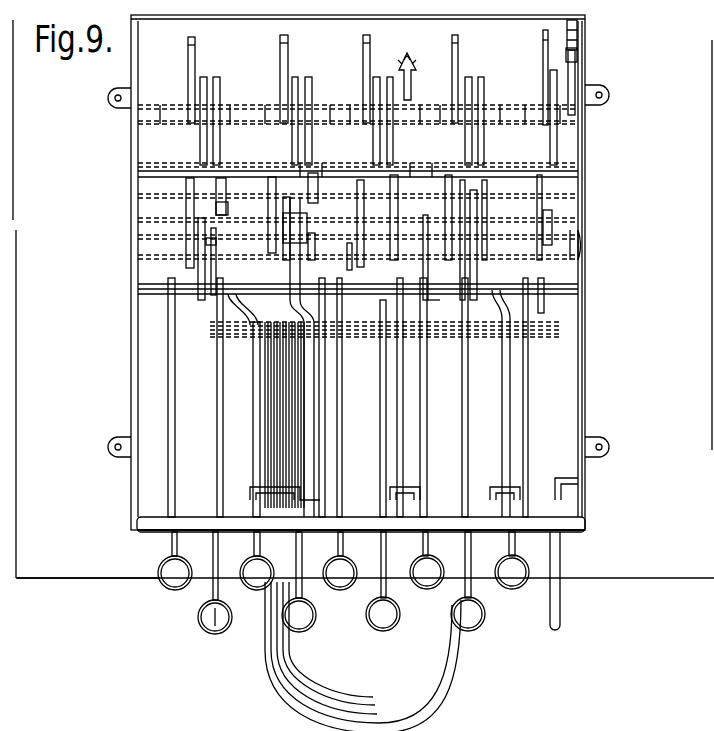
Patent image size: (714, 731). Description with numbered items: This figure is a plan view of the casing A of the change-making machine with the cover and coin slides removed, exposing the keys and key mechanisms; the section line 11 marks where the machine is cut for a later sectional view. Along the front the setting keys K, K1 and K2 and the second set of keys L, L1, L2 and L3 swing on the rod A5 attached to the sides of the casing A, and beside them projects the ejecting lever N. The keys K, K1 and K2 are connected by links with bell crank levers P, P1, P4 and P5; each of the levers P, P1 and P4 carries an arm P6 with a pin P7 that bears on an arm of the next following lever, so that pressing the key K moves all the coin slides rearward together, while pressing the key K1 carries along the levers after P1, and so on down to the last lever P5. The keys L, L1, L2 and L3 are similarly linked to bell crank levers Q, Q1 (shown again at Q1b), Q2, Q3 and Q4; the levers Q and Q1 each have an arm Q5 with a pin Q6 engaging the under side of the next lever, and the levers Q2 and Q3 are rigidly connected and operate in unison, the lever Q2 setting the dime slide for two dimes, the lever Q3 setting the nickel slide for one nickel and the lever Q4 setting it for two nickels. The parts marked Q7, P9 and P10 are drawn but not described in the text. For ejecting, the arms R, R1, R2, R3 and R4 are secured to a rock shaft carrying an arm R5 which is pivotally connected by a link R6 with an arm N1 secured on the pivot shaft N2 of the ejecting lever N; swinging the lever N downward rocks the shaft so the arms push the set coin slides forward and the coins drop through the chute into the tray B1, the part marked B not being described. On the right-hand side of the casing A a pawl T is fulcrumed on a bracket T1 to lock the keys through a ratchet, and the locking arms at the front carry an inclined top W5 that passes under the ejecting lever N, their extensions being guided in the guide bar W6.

The section line 11 is at (358, 343).
The casing A is at (373, 438).
The rod A5 is at (172, 110).
The arm R is at (186, 55).
The arm R1 is at (278, 57).
The arm R2 is at (361, 52).
The arm R3 is at (450, 52).
The arm R4 is at (541, 50).
The arm R5 is at (464, 86).
The link R6 is at (404, 66).
The bracket T1 is at (578, 32).
The pawl T is at (578, 60).
The ejecting lever N is at (585, 380).
The arm N1 is at (322, 157).
The pivot or shaft N2 is at (421, 157).
The lever Q is at (184, 260).
The lever Q1 is at (282, 260).
The lever Q1b is at (430, 257).
The lever Q2 is at (336, 229).
The lever Q3 is at (452, 240).
The lever Q4 is at (267, 236).
The arm Q5 is at (266, 235).
The pin Q6 is at (536, 217).
The pawl Q7 is at (486, 215).
The lever P is at (205, 310).
The lever P1 is at (288, 414).
The lever P4 is at (435, 303).
The lever P5 is at (551, 454).
The arm P6 is at (340, 397).
The pin P7 is at (499, 553).
The arm P9 is at (406, 397).
The arm P10 is at (402, 217).
The setting key K is at (156, 553).
The setting key K1 is at (336, 553).
The setting key K2 is at (420, 553).
The key L is at (227, 632).
The key L1 is at (378, 385).
The key L2 is at (448, 368).
The key L3 is at (535, 397).
The inclined top W5 is at (350, 515).
The guide bar W6 is at (540, 500).
The base B is at (339, 591).
The tray B1 is at (452, 655).